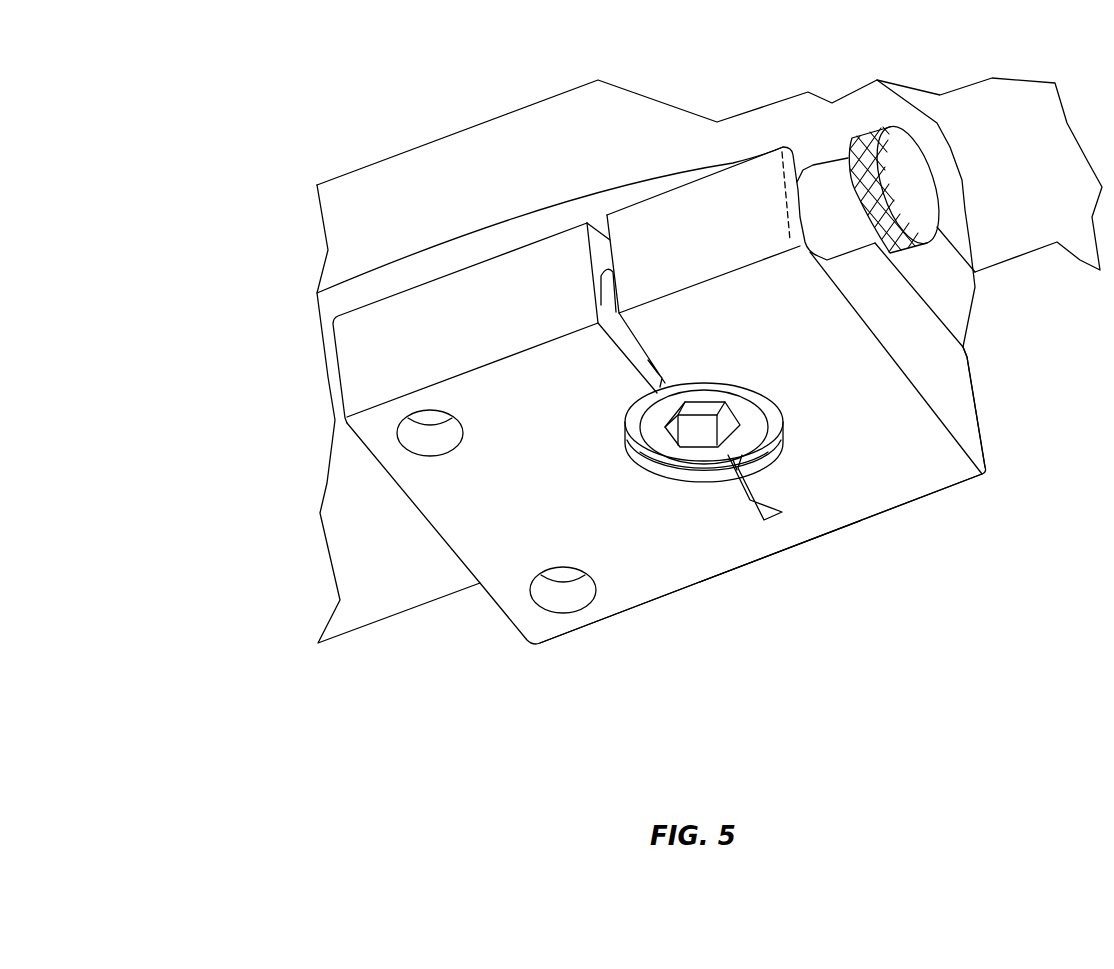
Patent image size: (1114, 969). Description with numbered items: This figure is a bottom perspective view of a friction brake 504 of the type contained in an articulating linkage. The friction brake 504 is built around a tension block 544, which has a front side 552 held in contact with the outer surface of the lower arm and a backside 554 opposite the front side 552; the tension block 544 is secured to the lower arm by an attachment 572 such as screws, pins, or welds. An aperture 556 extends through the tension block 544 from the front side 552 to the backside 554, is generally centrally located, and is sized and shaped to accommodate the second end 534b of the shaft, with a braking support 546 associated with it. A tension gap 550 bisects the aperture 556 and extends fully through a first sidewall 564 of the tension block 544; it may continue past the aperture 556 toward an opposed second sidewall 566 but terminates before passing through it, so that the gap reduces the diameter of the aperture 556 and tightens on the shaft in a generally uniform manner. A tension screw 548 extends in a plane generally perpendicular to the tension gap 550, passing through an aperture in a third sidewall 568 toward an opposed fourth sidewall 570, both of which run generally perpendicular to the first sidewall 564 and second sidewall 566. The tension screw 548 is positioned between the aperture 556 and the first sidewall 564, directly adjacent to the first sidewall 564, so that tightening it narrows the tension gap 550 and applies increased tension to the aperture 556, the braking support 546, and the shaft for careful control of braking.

The friction brake 504 is at (262, 330).
The second end of shaft 534b is at (652, 430).
The tension block 544 is at (380, 440).
The braking support 546 is at (783, 450).
The tension screw 548 is at (915, 205).
The tension gap 550 is at (747, 475).
The front side 552 is at (977, 368).
The backside 554 is at (915, 478).
The aperture 556 is at (690, 477).
The first sidewall 564 is at (362, 327).
The second sidewall 566 is at (860, 522).
The third sidewall 568 is at (972, 403).
The fourth sidewall 570 is at (337, 378).
The attachment 572 is at (550, 580).